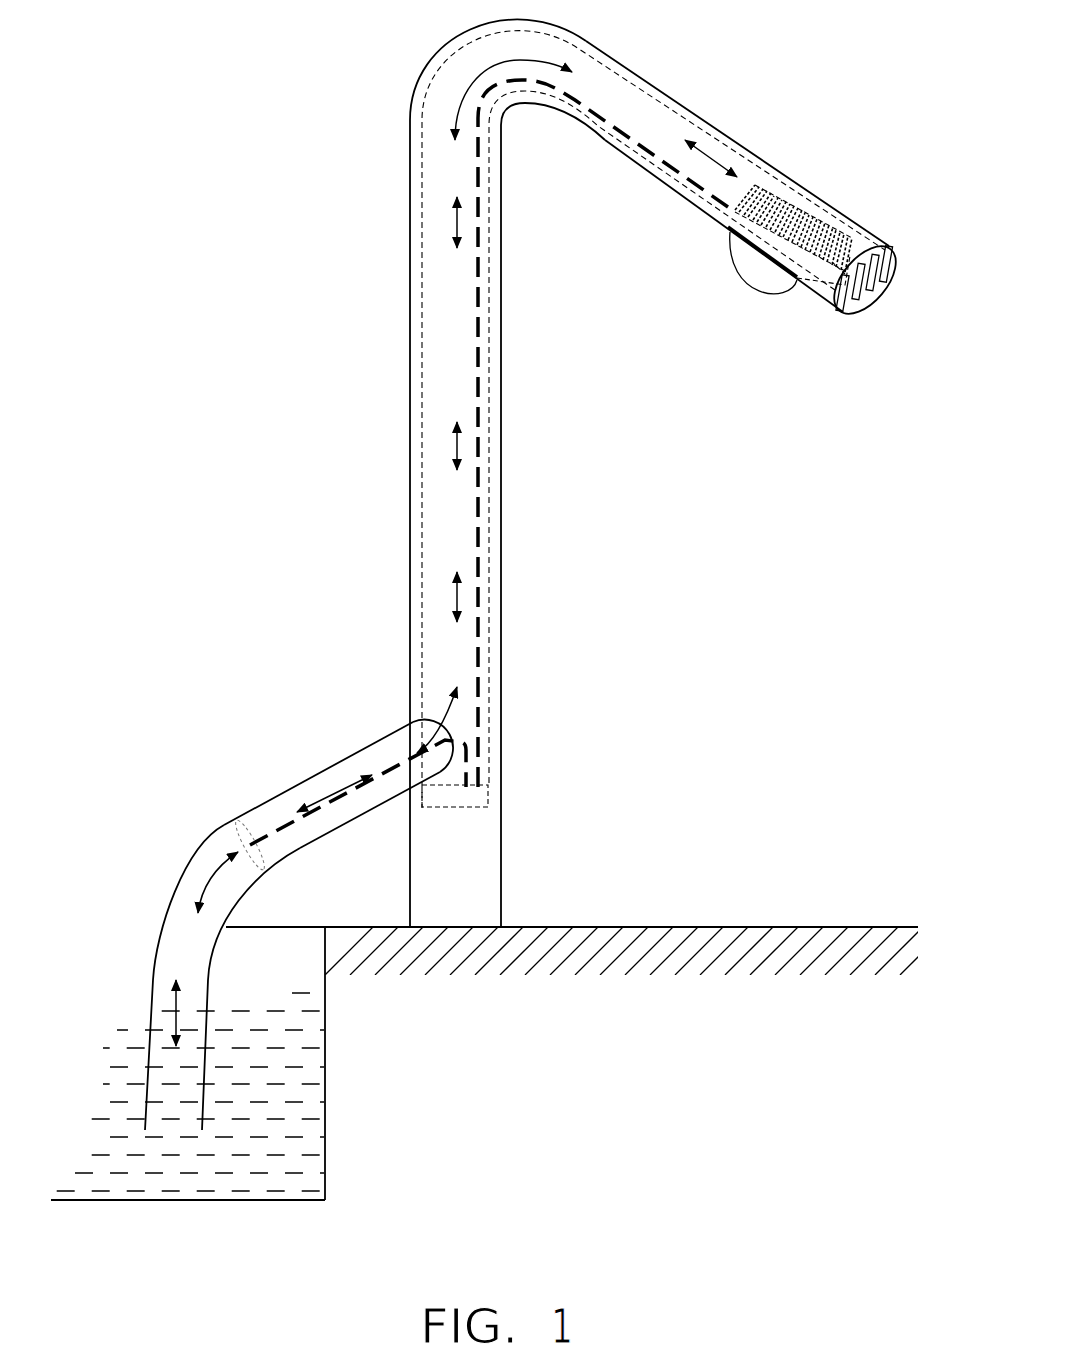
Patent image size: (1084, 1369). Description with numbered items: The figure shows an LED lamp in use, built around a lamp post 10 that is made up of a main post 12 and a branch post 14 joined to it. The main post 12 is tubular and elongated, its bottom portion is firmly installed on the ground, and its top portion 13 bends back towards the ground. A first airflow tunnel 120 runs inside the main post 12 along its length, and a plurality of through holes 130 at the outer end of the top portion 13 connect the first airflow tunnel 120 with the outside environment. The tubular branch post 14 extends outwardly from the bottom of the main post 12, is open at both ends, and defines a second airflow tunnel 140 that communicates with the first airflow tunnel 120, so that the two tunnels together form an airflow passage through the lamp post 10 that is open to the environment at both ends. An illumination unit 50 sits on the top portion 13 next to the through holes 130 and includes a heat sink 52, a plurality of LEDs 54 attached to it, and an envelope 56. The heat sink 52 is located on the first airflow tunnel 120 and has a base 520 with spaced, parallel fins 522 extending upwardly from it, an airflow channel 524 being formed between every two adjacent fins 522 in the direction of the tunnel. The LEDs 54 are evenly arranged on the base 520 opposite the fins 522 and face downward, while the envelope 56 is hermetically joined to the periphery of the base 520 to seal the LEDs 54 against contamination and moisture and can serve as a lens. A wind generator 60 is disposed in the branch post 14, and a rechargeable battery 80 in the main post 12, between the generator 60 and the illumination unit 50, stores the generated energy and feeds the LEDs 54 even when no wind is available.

The lamp post 10 is at (218, 545).
The main post 12 is at (417, 597).
The first airflow tunnel 120 is at (450, 165).
The top portion 13 is at (653, 84).
The through holes 130 is at (896, 268).
The branch post 14 is at (353, 757).
The second airflow tunnel 140 is at (254, 827).
The generator 60 is at (235, 826).
The rechargeable battery 80 is at (478, 790).
The illumination unit 50 is at (790, 428).
The heat sink 52 is at (778, 364).
The base 520 is at (797, 275).
The fins 522 is at (760, 238).
The airflow channel 524 is at (758, 185).
The LEDs 54 is at (838, 270).
The envelope 56 is at (730, 238).